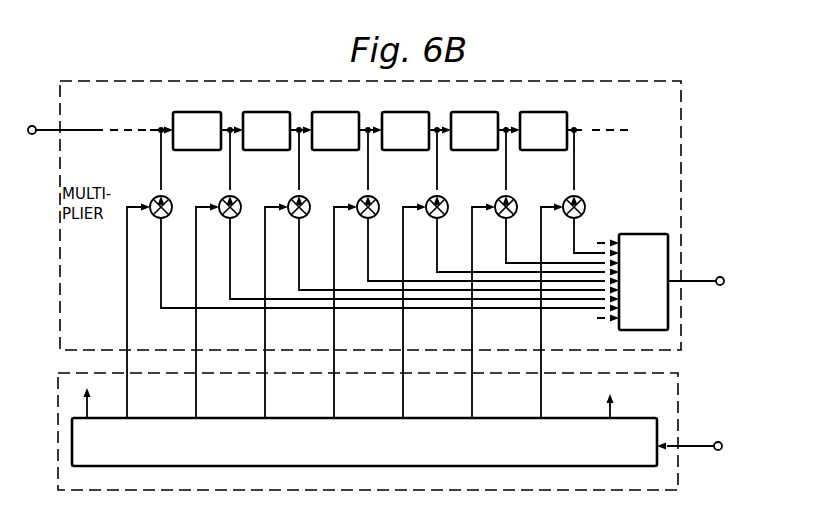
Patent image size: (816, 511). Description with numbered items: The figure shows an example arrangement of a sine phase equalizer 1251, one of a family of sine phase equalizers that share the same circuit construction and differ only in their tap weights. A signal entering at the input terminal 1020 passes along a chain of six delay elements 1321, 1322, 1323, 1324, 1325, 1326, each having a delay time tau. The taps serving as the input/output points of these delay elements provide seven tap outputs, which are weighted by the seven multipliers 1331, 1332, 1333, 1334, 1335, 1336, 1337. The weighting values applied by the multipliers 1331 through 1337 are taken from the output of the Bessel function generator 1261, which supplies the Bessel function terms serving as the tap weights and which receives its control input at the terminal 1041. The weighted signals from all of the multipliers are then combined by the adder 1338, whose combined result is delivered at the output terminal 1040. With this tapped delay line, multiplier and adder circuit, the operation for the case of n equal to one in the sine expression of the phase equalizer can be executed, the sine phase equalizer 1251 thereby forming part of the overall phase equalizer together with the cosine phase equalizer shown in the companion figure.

The input terminal 1020 is at (32, 125).
The sine phase equalizer 1251 is at (622, 80).
The delay element 1321 is at (182, 112).
The delay element 1322 is at (252, 112).
The delay element 1323 is at (321, 112).
The delay element 1324 is at (391, 112).
The delay element 1325 is at (460, 112).
The delay element 1326 is at (529, 112).
The multiplier 1331 is at (170, 198).
The multiplier 1332 is at (239, 198).
The multiplier 1333 is at (308, 198).
The multiplier 1334 is at (377, 198).
The multiplier 1335 is at (446, 198).
The multiplier 1336 is at (515, 198).
The multiplier 1337 is at (583, 198).
The adder 1338 is at (642, 232).
The output terminal 1040 is at (719, 275).
The Bessel function generator 1261 is at (368, 431).
The control input terminal 1041 is at (717, 439).